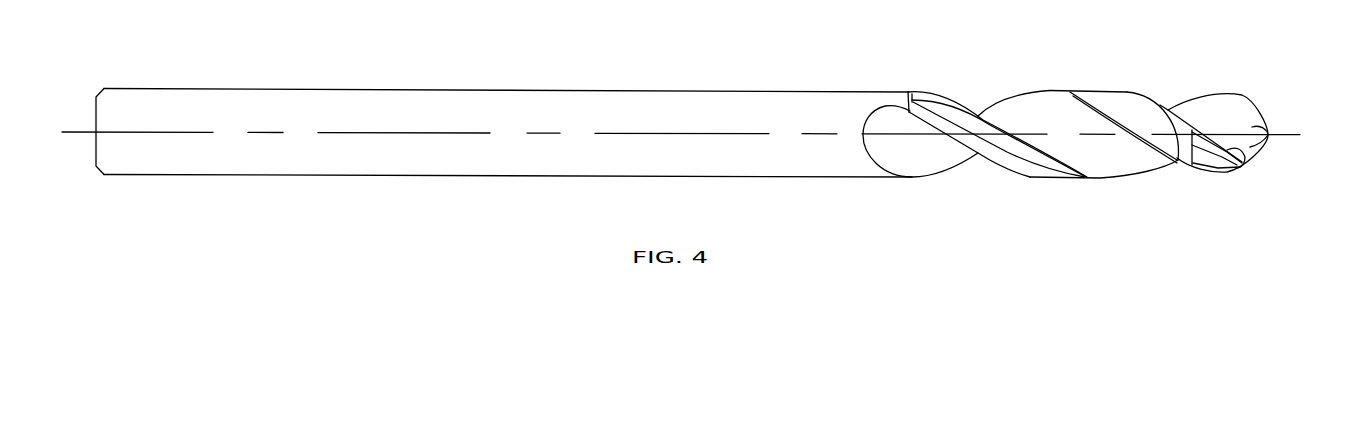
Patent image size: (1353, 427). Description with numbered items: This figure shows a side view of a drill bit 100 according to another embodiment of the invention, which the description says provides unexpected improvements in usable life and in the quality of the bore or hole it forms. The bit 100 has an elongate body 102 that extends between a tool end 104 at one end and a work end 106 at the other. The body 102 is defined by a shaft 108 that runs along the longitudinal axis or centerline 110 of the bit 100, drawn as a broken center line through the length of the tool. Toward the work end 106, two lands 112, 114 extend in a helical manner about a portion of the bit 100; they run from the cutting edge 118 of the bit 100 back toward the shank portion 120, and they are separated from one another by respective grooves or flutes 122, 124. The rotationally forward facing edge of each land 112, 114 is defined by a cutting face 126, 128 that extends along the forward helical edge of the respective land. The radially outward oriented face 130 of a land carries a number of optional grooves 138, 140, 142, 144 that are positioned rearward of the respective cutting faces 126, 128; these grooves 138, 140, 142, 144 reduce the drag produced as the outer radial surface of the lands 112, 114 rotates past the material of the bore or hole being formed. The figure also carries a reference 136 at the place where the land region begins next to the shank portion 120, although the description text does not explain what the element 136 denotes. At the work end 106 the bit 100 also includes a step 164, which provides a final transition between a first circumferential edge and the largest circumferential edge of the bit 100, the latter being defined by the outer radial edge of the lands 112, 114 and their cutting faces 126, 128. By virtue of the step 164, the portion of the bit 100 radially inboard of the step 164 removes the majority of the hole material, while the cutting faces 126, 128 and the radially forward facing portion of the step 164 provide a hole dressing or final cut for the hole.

The bit 100 is at (731, 42).
The elongate body 102 is at (405, 167).
The tool end 104 is at (95, 155).
The work end 106 is at (1288, 77).
The shaft 108 is at (482, 123).
The longitudinal axis or centerline 110 is at (63, 131).
The land 112 is at (1126, 98).
The land 114 is at (1042, 173).
The cutting edge 118 is at (1247, 160).
The shank portion 120 is at (826, 68).
The groove or flute 122 is at (1018, 112).
The groove or flute 124 is at (977, 170).
The cutting face 126 is at (1157, 150).
The cutting face 128 is at (950, 140).
The radially outward oriented face 130 is at (1087, 83).
The flute start 136 is at (924, 90).
The groove 138 is at (1148, 110).
The groove 140 is at (1140, 127).
The groove 142 is at (948, 107).
The groove 144 is at (937, 115).
The step 164 is at (1192, 165).